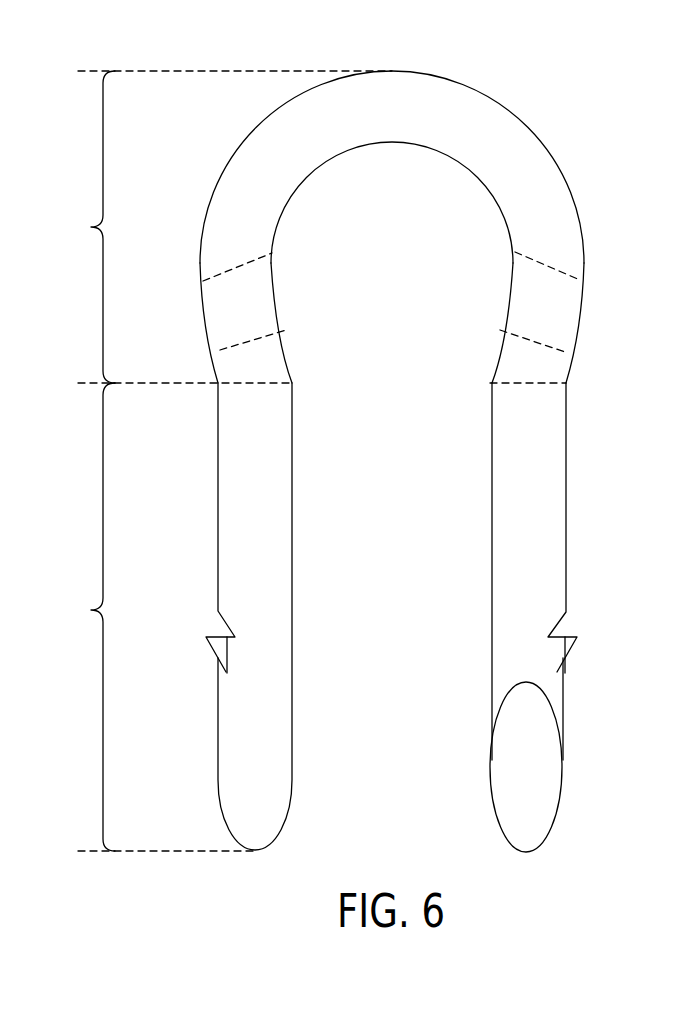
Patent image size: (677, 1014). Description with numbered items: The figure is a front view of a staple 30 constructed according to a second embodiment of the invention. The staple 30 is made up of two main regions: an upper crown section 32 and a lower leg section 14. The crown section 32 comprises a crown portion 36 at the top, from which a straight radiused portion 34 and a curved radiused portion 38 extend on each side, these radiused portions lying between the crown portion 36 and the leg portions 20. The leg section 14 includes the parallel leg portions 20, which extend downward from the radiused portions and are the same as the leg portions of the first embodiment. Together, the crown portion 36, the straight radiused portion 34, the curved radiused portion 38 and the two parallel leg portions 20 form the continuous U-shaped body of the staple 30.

The staple 30 is at (421, 196).
The crown section 32 is at (88, 227).
The straight radiused portion 34 is at (577, 315).
The crown portion 36 is at (587, 213).
The curved radiused portion 38 is at (566, 368).
The leg portions 20 is at (219, 550).
The leg section 14 is at (88, 617).